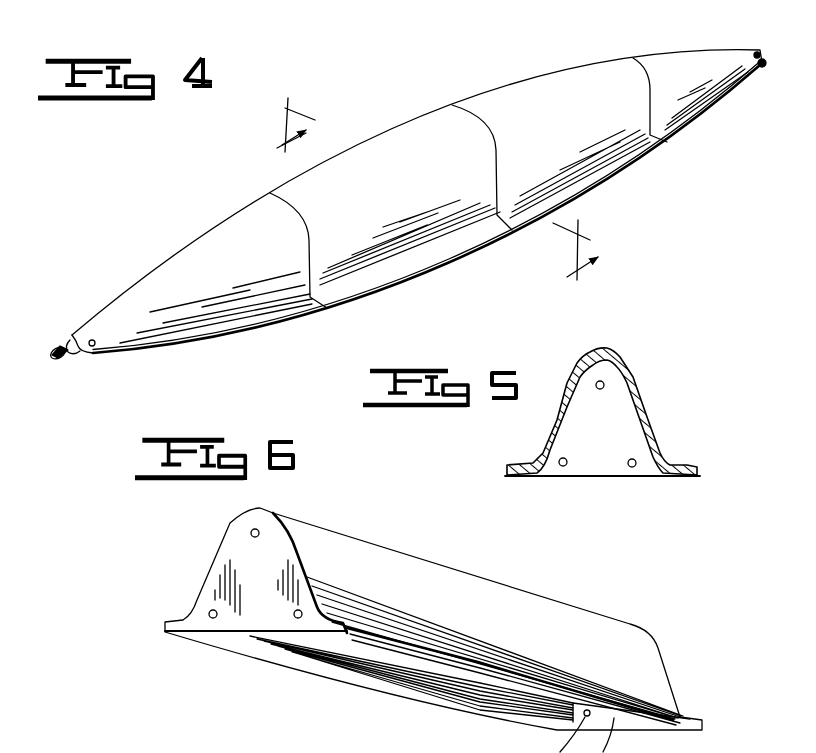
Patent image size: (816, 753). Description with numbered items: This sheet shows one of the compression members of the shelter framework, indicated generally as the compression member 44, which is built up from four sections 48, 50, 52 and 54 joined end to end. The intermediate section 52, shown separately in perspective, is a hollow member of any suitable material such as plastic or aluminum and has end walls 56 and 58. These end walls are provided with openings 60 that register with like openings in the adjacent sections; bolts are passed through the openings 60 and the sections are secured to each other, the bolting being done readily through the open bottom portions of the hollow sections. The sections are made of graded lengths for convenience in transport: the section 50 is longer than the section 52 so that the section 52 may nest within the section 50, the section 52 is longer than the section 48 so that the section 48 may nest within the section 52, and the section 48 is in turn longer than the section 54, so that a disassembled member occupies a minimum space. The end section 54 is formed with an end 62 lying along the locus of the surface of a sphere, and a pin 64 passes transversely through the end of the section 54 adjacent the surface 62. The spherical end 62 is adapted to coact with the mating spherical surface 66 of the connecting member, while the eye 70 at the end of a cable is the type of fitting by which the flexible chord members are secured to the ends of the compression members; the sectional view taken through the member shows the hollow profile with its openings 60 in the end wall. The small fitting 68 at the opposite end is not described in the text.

In FIG. 4, the compression member 44 is at (412, 110).
In FIG. 6, the compression member 44 is at (433, 690).
In FIG. 4, the section 48 is at (191, 250).
In FIG. 4, the section 50 is at (355, 153).
In FIG. 5, the section 50 is at (651, 410).
In FIG. 4, the section 52 is at (530, 78).
In FIG. 6, the section 52 is at (477, 576).
In FIG. 4, the section 54 is at (682, 49).
In FIG. 6, the end wall 56 is at (248, 620).
In FIG. 5, the end wall 58 is at (617, 468).
In FIG. 5, the openings 60 is at (604, 384).
In FIG. 6, the openings 60 is at (258, 531).
In FIG. 4, the end 62 is at (761, 54).
In FIG. 4, the pin 64 is at (761, 68).
In FIG. 4, the spherical surface 66 is at (91, 347).
In FIG. 4, the bow fitting 68 is at (72, 356).
In FIG. 4, the eye 70 is at (53, 353).